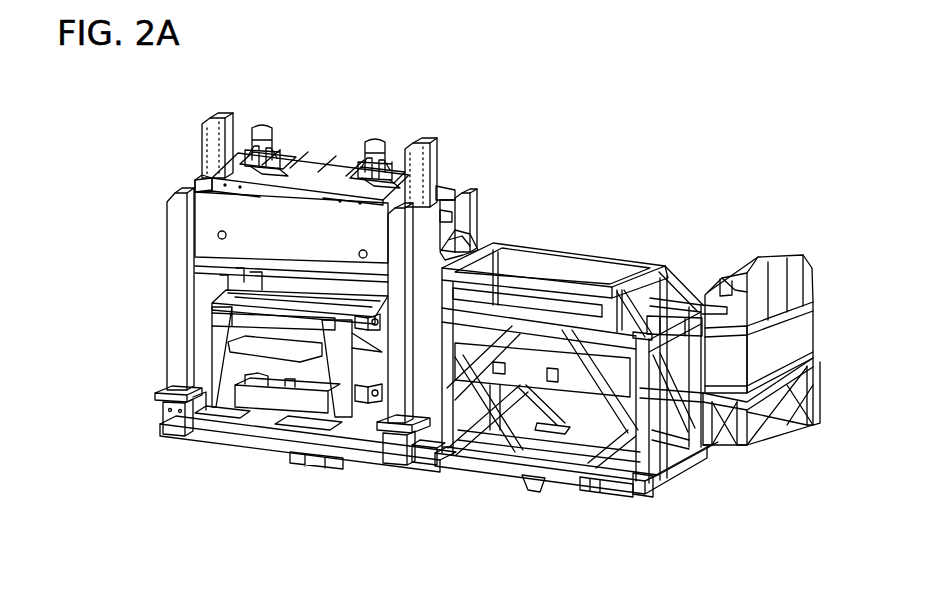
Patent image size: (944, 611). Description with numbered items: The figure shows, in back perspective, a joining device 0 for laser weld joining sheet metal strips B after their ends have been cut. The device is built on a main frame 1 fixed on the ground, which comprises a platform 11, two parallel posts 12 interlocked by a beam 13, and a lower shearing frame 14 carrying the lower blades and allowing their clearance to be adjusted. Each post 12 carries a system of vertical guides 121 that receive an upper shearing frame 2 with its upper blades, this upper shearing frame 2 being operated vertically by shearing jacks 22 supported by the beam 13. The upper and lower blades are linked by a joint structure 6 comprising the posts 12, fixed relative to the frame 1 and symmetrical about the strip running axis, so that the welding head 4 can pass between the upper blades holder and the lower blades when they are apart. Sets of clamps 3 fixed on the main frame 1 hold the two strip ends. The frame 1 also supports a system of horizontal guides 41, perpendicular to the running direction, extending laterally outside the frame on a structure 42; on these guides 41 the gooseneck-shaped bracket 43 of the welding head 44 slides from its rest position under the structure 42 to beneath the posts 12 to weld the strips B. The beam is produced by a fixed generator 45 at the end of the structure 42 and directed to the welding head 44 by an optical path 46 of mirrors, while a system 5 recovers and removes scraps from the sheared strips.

The joining device 0 is at (666, 152).
The main frame 1 is at (166, 435).
The upper shearing frame 2 is at (203, 140).
The sets of clamps 3 is at (300, 440).
The Laser welding head 4 is at (680, 486).
The system of recovery and removal of scraps 5 is at (540, 492).
The joint structure 6 is at (175, 272).
The platform 11 is at (170, 417).
The posts 12 is at (166, 233).
The beam 13 is at (326, 160).
The lower shearing frame 14 is at (360, 415).
The shearing jacks 22 is at (262, 122).
The system of horizontal guides 41 is at (518, 310).
The structure 42 is at (601, 494).
The gooseneck-shaped bracket 43 is at (537, 365).
The welding head 44 is at (424, 465).
The fixed generator 45 is at (795, 258).
The optical path 46 is at (556, 302).
The vertical guides 121 is at (205, 176).
The sheet metal strips B is at (232, 337).